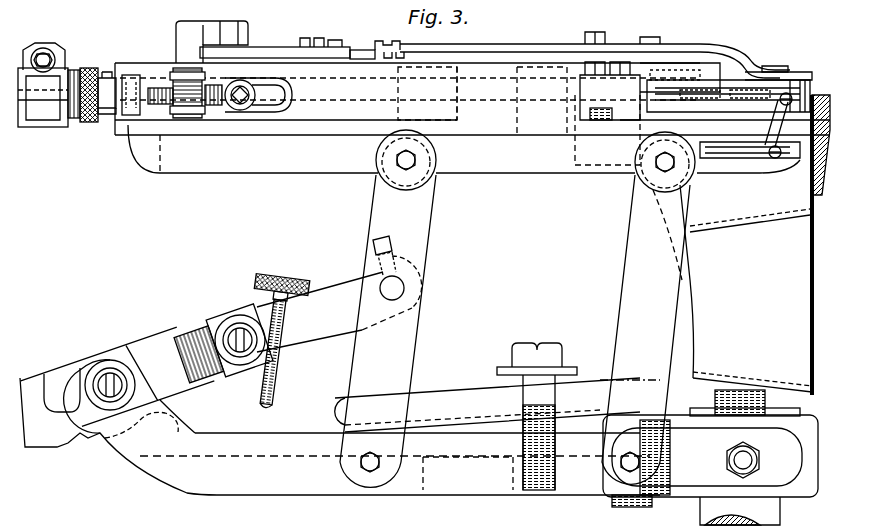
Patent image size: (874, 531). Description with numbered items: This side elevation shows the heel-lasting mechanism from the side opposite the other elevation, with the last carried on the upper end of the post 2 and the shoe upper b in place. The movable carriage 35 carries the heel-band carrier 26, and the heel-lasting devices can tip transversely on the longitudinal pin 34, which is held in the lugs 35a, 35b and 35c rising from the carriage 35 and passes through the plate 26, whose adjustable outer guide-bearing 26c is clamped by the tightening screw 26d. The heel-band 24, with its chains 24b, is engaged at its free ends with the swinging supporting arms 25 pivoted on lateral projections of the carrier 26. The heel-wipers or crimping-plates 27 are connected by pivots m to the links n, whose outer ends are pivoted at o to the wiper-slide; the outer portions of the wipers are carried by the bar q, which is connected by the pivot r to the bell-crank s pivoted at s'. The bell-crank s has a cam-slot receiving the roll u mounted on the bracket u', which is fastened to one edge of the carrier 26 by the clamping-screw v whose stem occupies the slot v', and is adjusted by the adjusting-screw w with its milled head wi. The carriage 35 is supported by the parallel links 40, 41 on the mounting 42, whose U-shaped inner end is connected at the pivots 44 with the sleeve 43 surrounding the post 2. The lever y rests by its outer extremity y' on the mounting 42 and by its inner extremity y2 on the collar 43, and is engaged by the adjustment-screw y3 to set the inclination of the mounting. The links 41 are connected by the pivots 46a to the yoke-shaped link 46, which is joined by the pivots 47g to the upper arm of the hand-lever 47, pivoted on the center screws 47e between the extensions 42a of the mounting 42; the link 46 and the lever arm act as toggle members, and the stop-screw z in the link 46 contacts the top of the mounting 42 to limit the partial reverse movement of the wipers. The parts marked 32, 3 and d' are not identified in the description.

The heel-band carrier 26 is at (50, 112).
The tightening screw 26d is at (40, 46).
The guide-bearing 26c is at (108, 78).
The longitudinal pin 34 is at (110, 75).
The milled head wi is at (85, 122).
The lug 35c is at (128, 120).
The adjusting-screw w is at (160, 110).
The bracket u' is at (176, 61).
The roll u is at (219, 33).
The lug 35a is at (218, 118).
The clamping-screw v is at (242, 119).
The slot v' is at (267, 118).
The carriage 35 is at (277, 165).
The lug 35b is at (505, 125).
The bell-crank s is at (275, 34).
The pivot r is at (303, 40).
The pivot s' is at (356, 35).
The bar q is at (366, 50).
The pivots o is at (398, 38).
The links n is at (690, 52).
The slide bar 32 is at (482, 68).
The swinging supporting arms 25 is at (640, 128).
The heel-band 24 is at (728, 134).
The chains 24b is at (736, 95).
The upper b is at (768, 65).
The pivots m is at (778, 50).
The heel-wipers 27 is at (790, 82).
The striker plate 3 is at (741, 245).
The parallel link 41 is at (432, 238).
The parallel link 40 is at (625, 258).
The lever y is at (487, 390).
The outer extremity y' is at (313, 409).
The inner extremity y2 is at (625, 378).
The adjustment-screw y3 is at (532, 345).
The mounting 42 is at (250, 495).
The outward extensions 42a is at (103, 425).
The hand-lever 47 is at (37, 449).
The center screws 47e is at (108, 362).
The pivots 47g is at (238, 315).
The stop-screw z is at (278, 388).
The connecting link 46 is at (338, 285).
The pivots 46a is at (400, 290).
The pivotal connections 44 is at (750, 462).
The sleeve 43 is at (700, 410).
The post 2 is at (782, 516).
The base rail d' is at (312, 524).